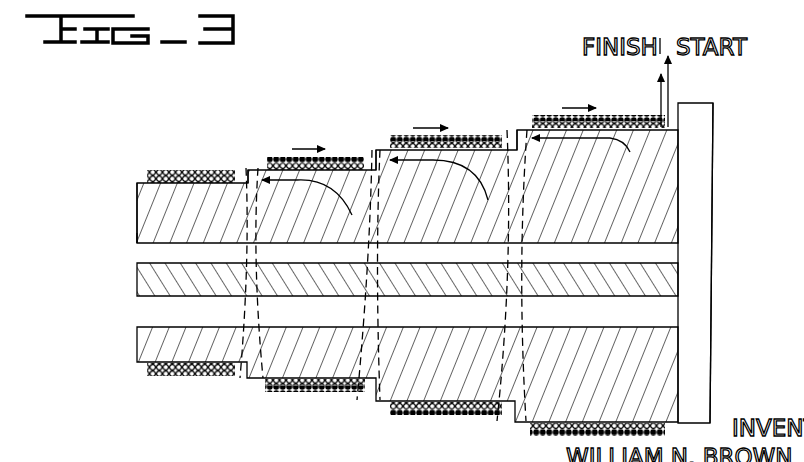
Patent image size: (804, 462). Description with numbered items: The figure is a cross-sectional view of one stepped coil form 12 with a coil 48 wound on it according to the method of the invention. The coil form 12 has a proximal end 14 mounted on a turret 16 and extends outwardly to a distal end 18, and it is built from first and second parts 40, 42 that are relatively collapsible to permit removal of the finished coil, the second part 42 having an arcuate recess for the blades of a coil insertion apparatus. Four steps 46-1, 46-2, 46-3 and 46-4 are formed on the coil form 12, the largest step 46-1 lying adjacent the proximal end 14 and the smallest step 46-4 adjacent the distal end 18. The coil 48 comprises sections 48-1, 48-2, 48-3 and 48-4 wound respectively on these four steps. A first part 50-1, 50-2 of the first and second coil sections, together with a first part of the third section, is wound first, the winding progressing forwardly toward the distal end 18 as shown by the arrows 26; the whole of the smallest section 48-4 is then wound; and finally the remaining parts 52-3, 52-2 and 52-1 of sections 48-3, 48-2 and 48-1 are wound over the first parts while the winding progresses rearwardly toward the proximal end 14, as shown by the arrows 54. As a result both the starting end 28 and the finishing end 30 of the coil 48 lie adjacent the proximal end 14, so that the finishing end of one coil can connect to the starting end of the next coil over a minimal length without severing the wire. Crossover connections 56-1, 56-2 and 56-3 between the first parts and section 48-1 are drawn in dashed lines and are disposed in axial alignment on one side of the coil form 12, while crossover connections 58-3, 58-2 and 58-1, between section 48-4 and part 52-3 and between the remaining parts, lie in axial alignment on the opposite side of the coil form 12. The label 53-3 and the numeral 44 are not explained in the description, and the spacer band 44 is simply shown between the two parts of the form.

The coil form 12 is at (58, 222).
The proximal end 14 is at (680, 184).
The turret 16 is at (713, 136).
The distal end 18 is at (130, 235).
The arrows 26 is at (462, 188).
The starting end 28 is at (672, 82).
The finishing end 30 is at (722, 4).
The first part 40 is at (132, 184).
The second part 42 is at (126, 349).
The central spacer band 44 is at (371, 291).
The first step 46-1 is at (617, 185).
The second step 46-2 is at (475, 201).
The third step 46-3 is at (334, 216).
The fourth step 46-4 is at (210, 226).
The coil 48 is at (421, 87).
The first coil section 48-1 is at (535, 107).
The second coil section 48-2 is at (401, 127).
The third coil section 48-3 is at (289, 142).
The fourth coil section 48-4 is at (188, 151).
The first part of first coil section 50-1 is at (555, 167).
The first part of second coil section 50-2 is at (372, 201).
The remaining part of first coil section 52-1 is at (622, 105).
The remaining part of second coil section 52-2 is at (482, 130).
The remaining part of third coil section 52-3 is at (347, 153).
The third step shoulder 53-3 is at (285, 206).
The arrows 54 is at (312, 148).
The crossover connection 56-1 is at (525, 383).
The crossover connection 56-2 is at (377, 354).
The crossover connection 56-3 is at (263, 353).
The crossover connection 58-1 is at (518, 234).
The crossover connection 58-2 is at (445, 279).
The crossover connection 58-3 is at (256, 279).